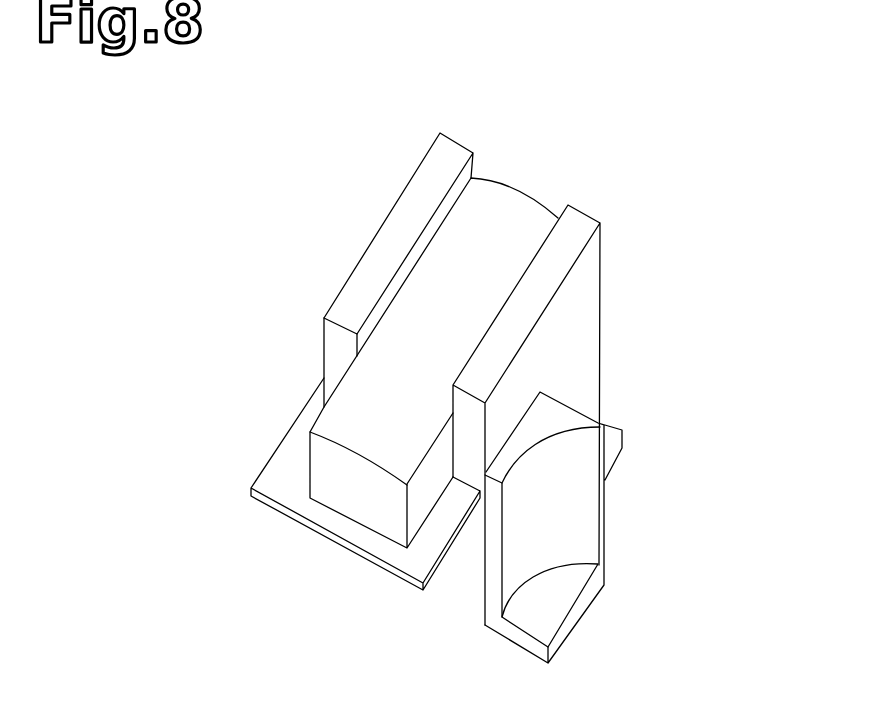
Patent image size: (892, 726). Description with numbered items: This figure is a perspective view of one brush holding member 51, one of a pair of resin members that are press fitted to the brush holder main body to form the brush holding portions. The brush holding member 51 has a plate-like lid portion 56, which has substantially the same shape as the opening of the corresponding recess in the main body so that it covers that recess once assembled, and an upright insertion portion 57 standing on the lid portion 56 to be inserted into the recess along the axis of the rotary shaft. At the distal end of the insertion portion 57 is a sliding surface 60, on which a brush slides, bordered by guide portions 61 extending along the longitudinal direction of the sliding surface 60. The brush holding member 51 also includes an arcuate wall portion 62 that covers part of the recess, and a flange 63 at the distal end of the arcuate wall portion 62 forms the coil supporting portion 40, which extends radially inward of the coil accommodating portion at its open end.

The brush holding member 51 is at (245, 185).
The lid portion 56 is at (258, 483).
The insertion portion 57 is at (324, 339).
The sliding surface 60 is at (333, 425).
The guide portion 61 is at (451, 142).
The arcuate wall portion 62 is at (485, 613).
The flange 63 is at (553, 608).
The coil supporting portion 40 is at (551, 537).